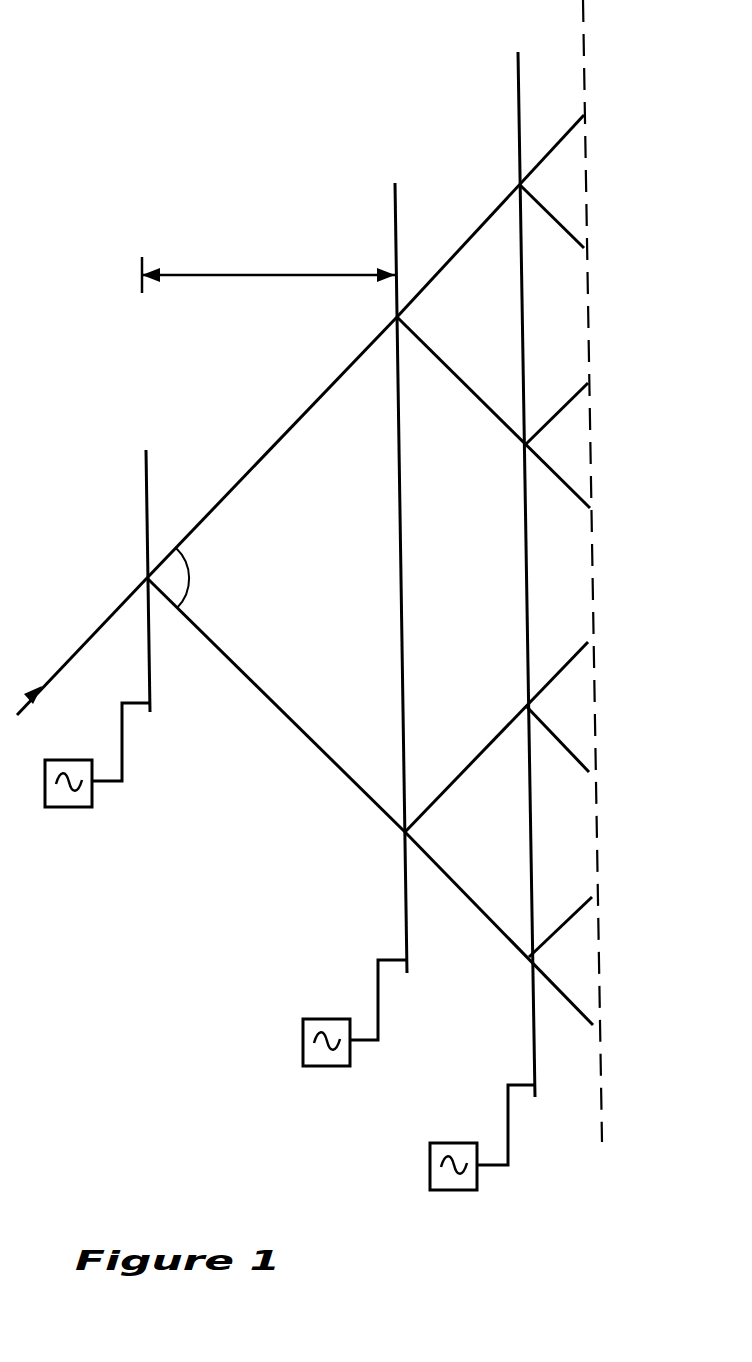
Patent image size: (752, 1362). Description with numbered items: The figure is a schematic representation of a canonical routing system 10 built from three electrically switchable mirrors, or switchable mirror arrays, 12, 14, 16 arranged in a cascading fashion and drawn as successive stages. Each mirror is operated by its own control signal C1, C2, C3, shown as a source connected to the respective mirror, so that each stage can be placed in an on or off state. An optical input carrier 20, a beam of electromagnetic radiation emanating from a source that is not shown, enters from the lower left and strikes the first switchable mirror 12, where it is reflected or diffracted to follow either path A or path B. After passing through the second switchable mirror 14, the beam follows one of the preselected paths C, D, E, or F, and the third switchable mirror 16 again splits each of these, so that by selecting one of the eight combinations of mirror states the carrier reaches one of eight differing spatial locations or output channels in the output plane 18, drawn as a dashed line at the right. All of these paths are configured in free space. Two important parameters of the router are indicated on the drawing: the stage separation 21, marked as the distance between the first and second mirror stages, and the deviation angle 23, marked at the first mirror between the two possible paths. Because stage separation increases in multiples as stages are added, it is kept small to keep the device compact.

The routing system 10 is at (163, 982).
The switchable mirror 12 is at (143, 470).
The switchable mirror 14 is at (392, 205).
The switchable mirror 16 is at (517, 80).
The output plane 18 is at (603, 1127).
The optical input carrier 20 is at (95, 633).
The stage separation 21 is at (264, 270).
The deviation angle 23 is at (188, 582).
The path A is at (285, 437).
The path B is at (287, 717).
The path C is at (463, 245).
The path D is at (465, 390).
The path E is at (473, 760).
The path F is at (475, 903).
The control signal C1 is at (97, 774).
The control signal C2 is at (355, 1031).
The control signal C3 is at (482, 1155).